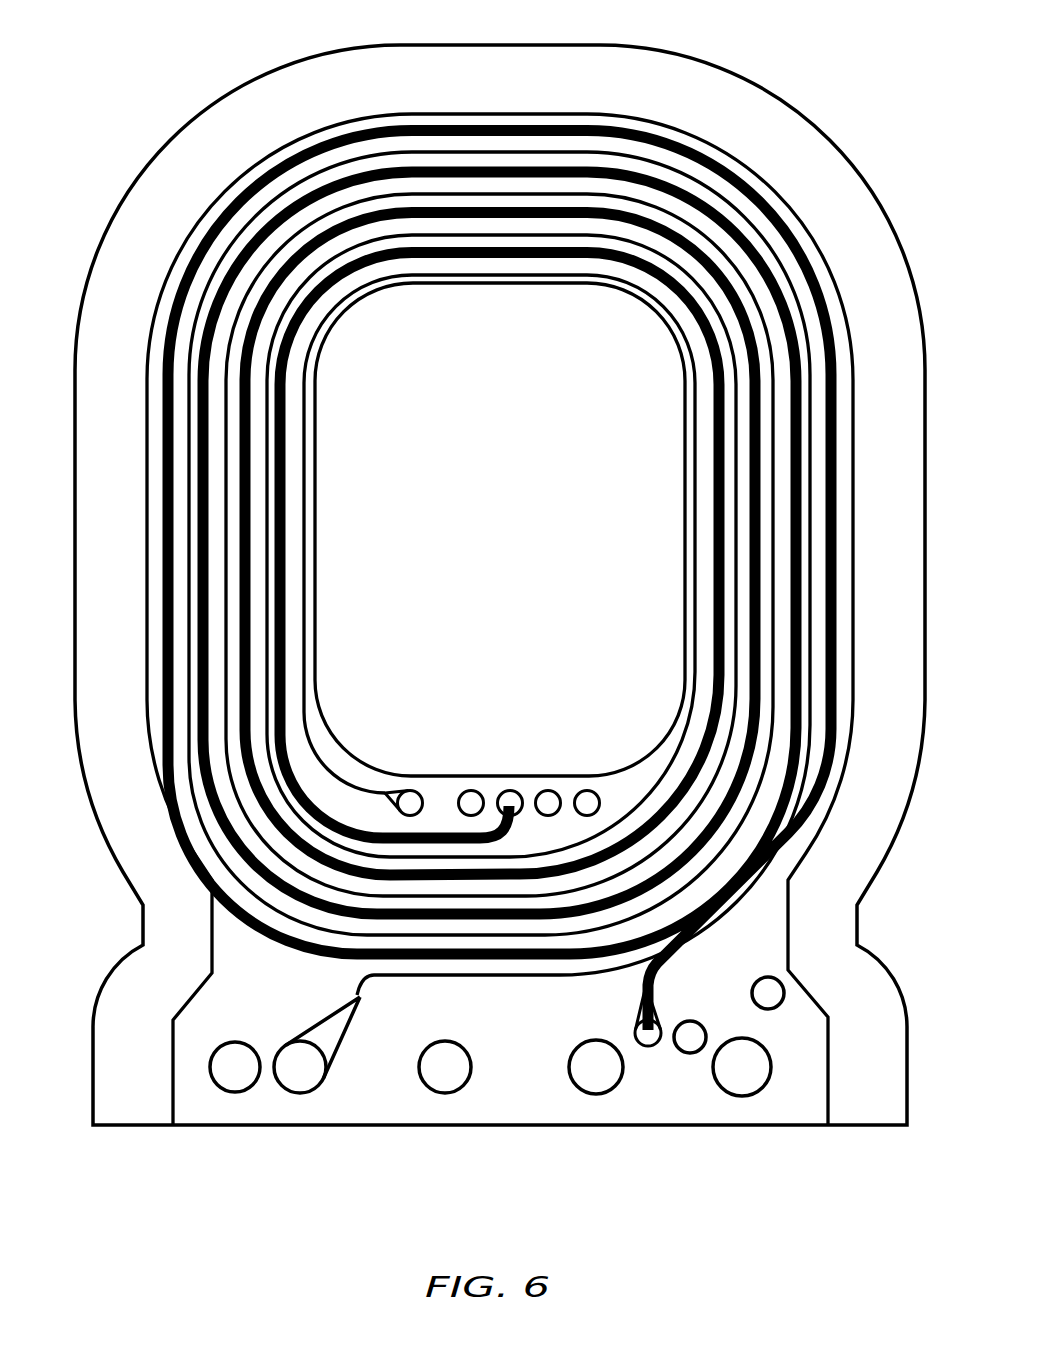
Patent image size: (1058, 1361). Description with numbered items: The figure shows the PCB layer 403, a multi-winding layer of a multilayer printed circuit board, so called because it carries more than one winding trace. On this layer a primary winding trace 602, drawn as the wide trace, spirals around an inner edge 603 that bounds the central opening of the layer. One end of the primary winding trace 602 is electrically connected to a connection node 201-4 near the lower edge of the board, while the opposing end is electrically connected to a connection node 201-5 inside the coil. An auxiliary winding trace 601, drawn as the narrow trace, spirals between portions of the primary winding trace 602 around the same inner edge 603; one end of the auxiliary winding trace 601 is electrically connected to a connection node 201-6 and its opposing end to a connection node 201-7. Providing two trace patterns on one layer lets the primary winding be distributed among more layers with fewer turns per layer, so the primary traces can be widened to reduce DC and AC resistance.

The PCB layer 403 is at (192, 48).
The auxiliary winding trace 601 is at (472, 276).
The primary winding trace 602 is at (713, 433).
The inner edge 603 is at (317, 415).
The connection node 201-7 is at (415, 798).
The connection node 201-5 is at (506, 800).
The connection node 201-6 is at (305, 1072).
The connection node 201-4 is at (648, 1042).